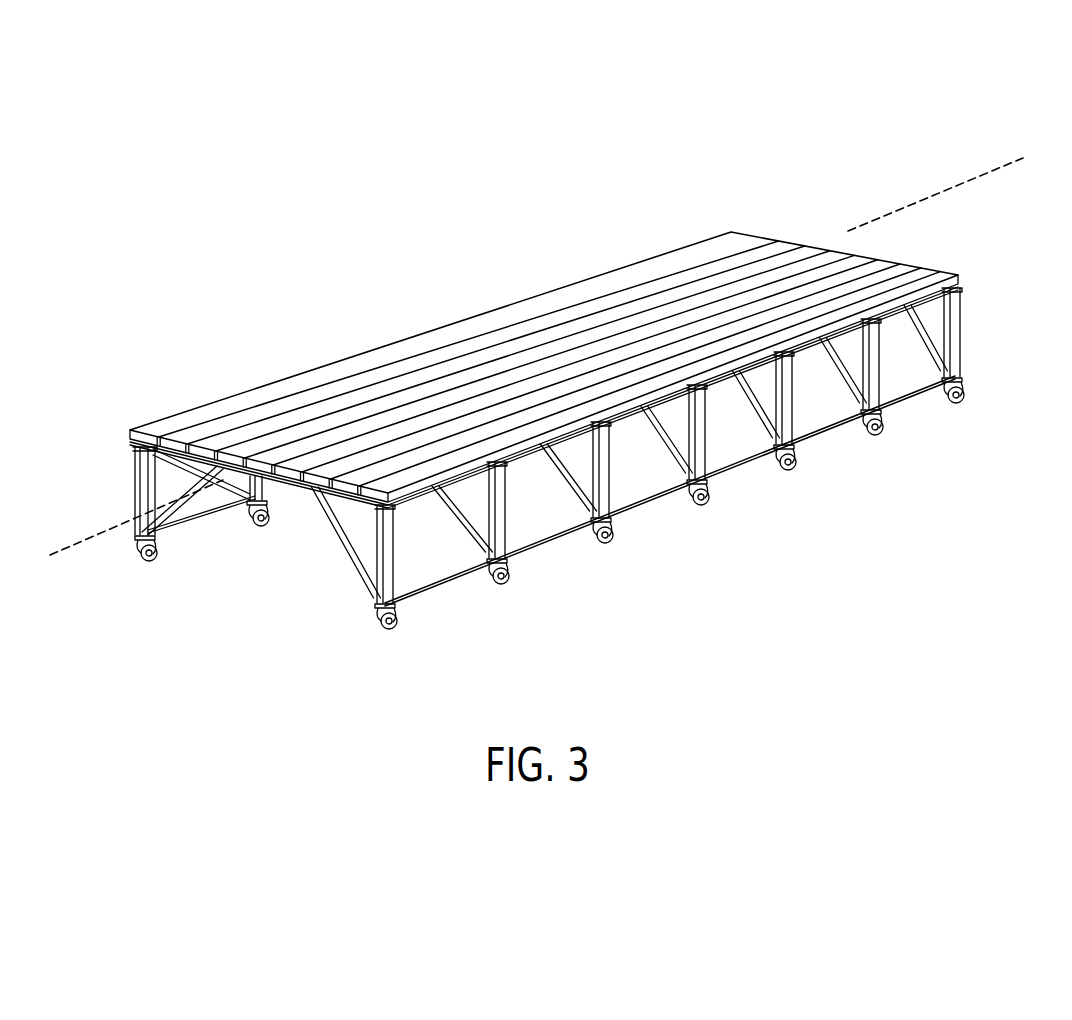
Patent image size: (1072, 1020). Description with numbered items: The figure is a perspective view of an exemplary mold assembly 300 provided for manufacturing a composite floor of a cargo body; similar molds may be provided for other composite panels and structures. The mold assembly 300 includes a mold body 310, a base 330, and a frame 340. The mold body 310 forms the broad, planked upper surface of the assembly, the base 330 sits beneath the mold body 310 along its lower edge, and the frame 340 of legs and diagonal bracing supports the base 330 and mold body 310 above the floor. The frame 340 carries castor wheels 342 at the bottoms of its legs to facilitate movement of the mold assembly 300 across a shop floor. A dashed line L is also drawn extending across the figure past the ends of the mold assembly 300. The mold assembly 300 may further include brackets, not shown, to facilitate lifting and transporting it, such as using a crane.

The mold assembly 300 is at (729, 150).
The mold body 310 is at (425, 358).
The base 330 is at (309, 492).
The frame 340 is at (610, 484).
The castor wheels 342 is at (787, 461).
The line L is at (963, 180).